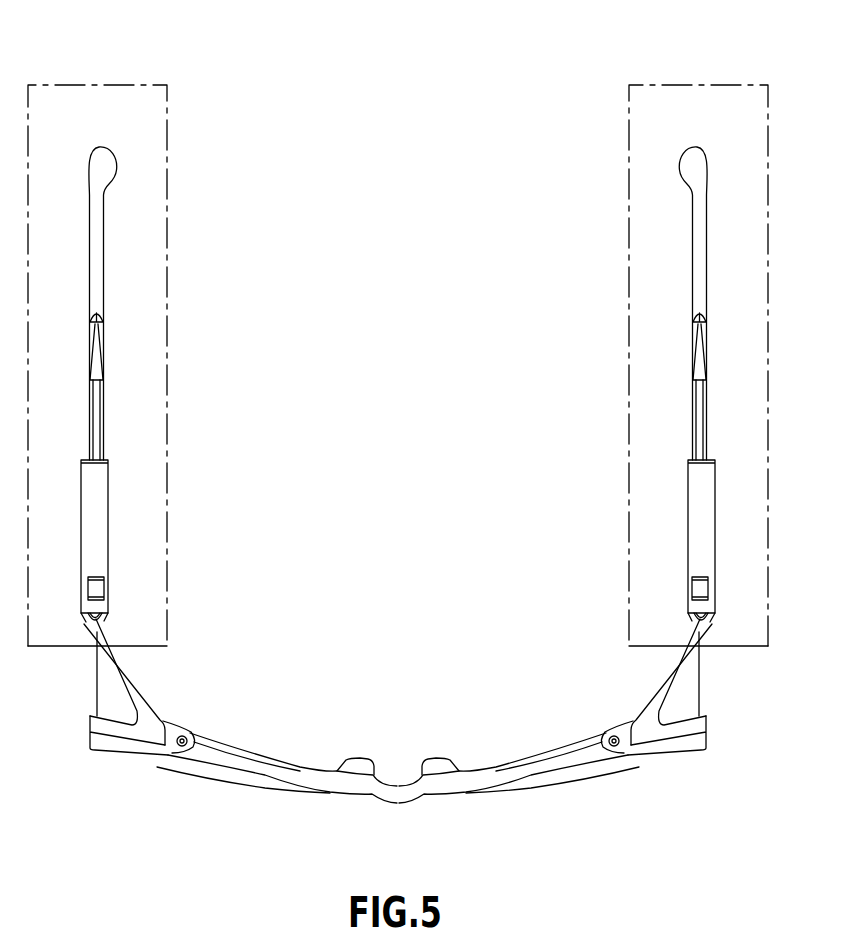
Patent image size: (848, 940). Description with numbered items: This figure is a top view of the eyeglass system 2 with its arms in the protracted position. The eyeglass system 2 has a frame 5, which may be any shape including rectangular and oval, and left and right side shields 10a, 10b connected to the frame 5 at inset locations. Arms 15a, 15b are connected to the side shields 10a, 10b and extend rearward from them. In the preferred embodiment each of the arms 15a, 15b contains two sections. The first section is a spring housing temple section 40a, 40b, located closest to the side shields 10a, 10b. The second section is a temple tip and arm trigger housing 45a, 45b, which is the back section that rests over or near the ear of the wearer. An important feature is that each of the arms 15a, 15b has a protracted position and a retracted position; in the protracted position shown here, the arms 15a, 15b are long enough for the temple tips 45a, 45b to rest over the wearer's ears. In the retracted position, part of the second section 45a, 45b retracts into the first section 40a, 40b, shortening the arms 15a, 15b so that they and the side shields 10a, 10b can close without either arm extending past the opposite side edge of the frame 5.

The eyeglass system 2 is at (398, 495).
The frame 5 is at (448, 786).
The left side shield 10a is at (696, 690).
The right side shield 10b is at (100, 690).
The left side arm 15a is at (636, 360).
The right side arm 15b is at (160, 360).
The spring housing temple section 40a is at (708, 511).
The spring housing temple section 40b is at (88, 511).
The temple tip and arm trigger housing 45a is at (707, 222).
The temple tip and arm trigger housing 45b is at (89, 222).